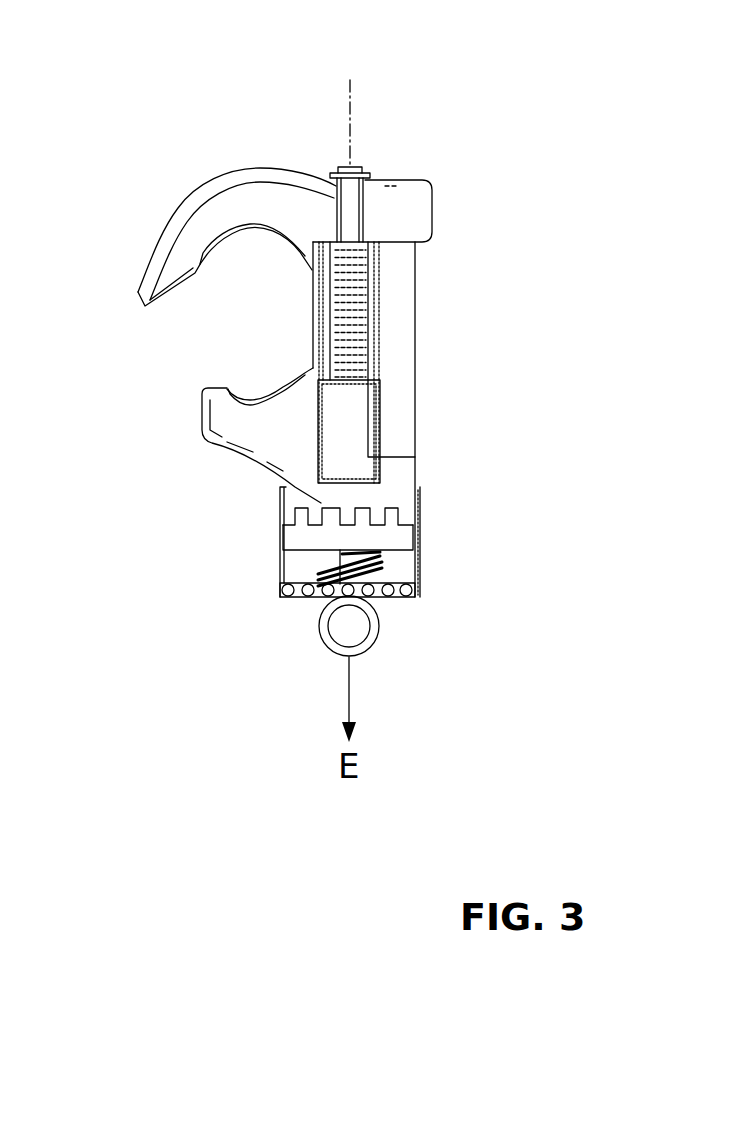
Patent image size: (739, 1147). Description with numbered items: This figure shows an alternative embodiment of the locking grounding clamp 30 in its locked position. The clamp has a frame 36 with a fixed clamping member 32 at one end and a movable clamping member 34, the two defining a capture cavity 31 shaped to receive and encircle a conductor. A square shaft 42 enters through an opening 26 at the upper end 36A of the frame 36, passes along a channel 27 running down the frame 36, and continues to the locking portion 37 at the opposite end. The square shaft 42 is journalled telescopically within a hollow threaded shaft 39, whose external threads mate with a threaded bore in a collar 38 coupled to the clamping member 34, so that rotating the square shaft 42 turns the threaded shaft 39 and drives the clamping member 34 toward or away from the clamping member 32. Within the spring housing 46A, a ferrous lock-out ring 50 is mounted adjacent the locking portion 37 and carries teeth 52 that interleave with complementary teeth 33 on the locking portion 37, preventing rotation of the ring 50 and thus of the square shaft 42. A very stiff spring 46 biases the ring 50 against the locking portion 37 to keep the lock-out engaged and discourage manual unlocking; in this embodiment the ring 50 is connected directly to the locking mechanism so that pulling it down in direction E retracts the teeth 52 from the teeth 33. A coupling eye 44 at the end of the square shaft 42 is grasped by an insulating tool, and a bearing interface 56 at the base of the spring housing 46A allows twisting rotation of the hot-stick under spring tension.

The locking grounding clamp 30 is at (386, 44).
The clamping member 32 is at (188, 192).
The opening 26 is at (366, 196).
The upper end 36A is at (413, 224).
The threaded shaft 39 is at (367, 284).
The channel 27 is at (376, 313).
The frame 36 is at (413, 356).
The collar 38 is at (354, 438).
The capture cavity 31 is at (270, 329).
The teeth 33 is at (320, 503).
The clamping member 34 is at (230, 451).
The teeth 52 is at (365, 522).
The lock-out ring 50 is at (293, 538).
The locking portion 37 is at (258, 505).
The spring housing 46A is at (420, 568).
The square shaft 42 is at (363, 577).
The spring 46 is at (317, 563).
The bearing interface 56 is at (307, 597).
The coupling eye 44 is at (383, 617).